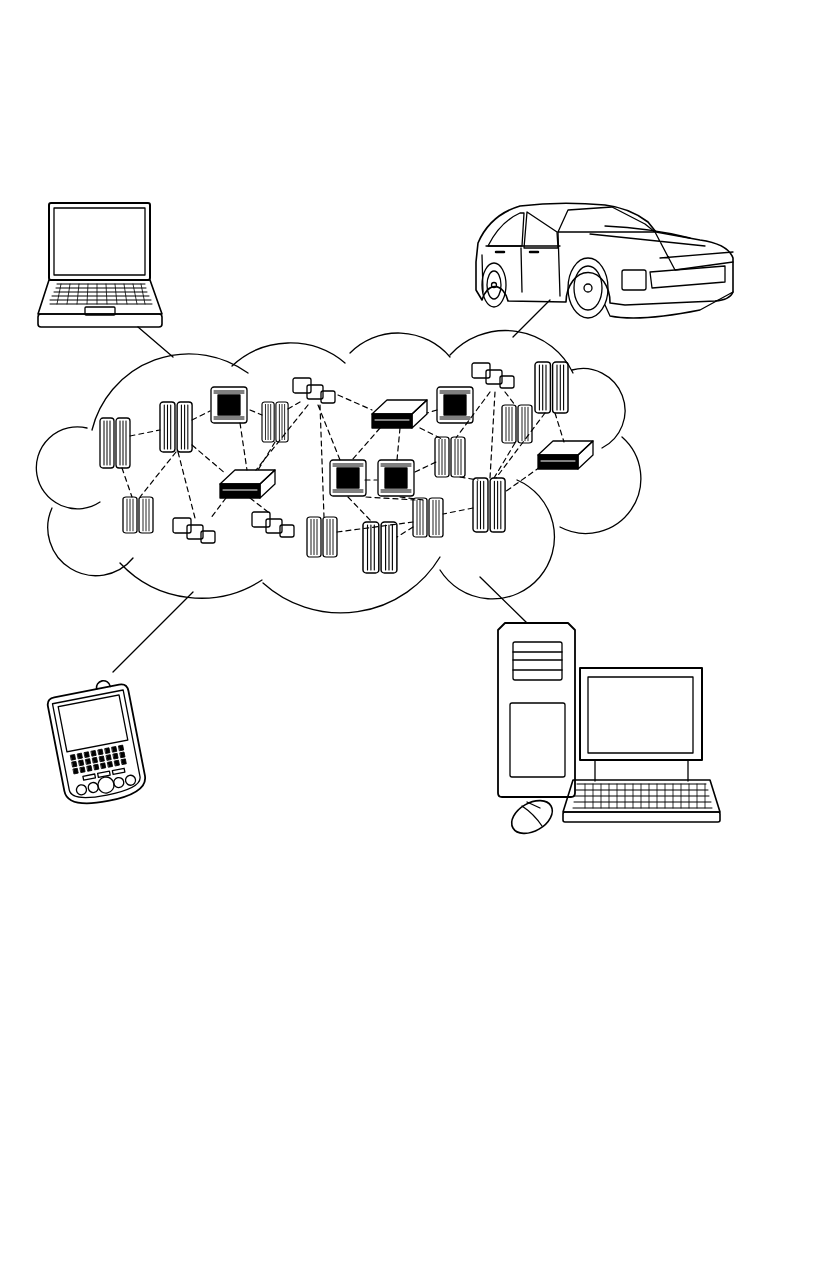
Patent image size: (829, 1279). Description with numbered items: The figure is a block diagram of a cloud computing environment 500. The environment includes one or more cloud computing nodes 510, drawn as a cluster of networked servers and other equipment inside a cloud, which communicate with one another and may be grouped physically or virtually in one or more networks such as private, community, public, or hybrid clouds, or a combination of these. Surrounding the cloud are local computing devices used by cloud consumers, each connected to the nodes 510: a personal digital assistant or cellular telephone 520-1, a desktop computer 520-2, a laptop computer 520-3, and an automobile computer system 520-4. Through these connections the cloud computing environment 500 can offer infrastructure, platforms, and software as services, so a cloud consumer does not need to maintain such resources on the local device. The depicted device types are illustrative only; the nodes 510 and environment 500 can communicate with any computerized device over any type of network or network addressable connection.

The cloud computing environment 500 is at (279, 62).
The cloud computing nodes 510 is at (606, 475).
The personal digital assistant (PDA) or cellular telephone 520-1 is at (143, 735).
The desktop computer 520-2 is at (640, 668).
The laptop computer 520-3 is at (152, 252).
The automobile computer system 520-4 is at (482, 258).